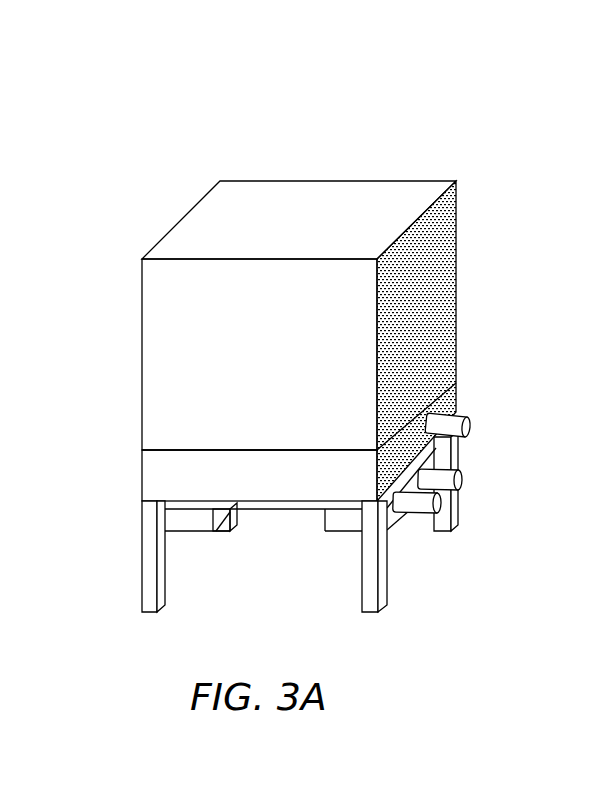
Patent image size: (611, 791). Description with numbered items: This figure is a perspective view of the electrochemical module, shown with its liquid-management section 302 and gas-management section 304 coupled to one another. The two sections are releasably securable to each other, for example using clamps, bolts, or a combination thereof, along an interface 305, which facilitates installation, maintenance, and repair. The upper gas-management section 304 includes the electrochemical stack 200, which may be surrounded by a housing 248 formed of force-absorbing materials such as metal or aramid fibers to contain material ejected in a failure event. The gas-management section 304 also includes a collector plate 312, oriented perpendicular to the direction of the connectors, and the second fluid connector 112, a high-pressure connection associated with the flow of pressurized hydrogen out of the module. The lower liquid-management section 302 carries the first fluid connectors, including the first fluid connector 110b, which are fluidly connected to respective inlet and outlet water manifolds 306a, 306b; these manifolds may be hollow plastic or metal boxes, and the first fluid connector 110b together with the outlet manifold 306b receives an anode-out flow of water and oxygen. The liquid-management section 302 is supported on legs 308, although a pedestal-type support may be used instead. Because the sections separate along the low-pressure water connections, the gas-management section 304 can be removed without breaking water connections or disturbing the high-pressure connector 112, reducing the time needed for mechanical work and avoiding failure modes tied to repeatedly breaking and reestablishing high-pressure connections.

The electrochemical stack 200 is at (188, 121).
The housing 248 is at (142, 325).
The gas-management section 304 is at (485, 428).
The liquid-management section 302 is at (485, 521).
The collector plate 312 is at (142, 450).
The interface 305 is at (142, 500).
The legs 308 is at (142, 552).
The inlet water manifold 306a is at (197, 527).
The outlet water manifold 306b is at (343, 520).
The second fluid connector 112 is at (470, 432).
The first fluid connector 110b is at (418, 508).